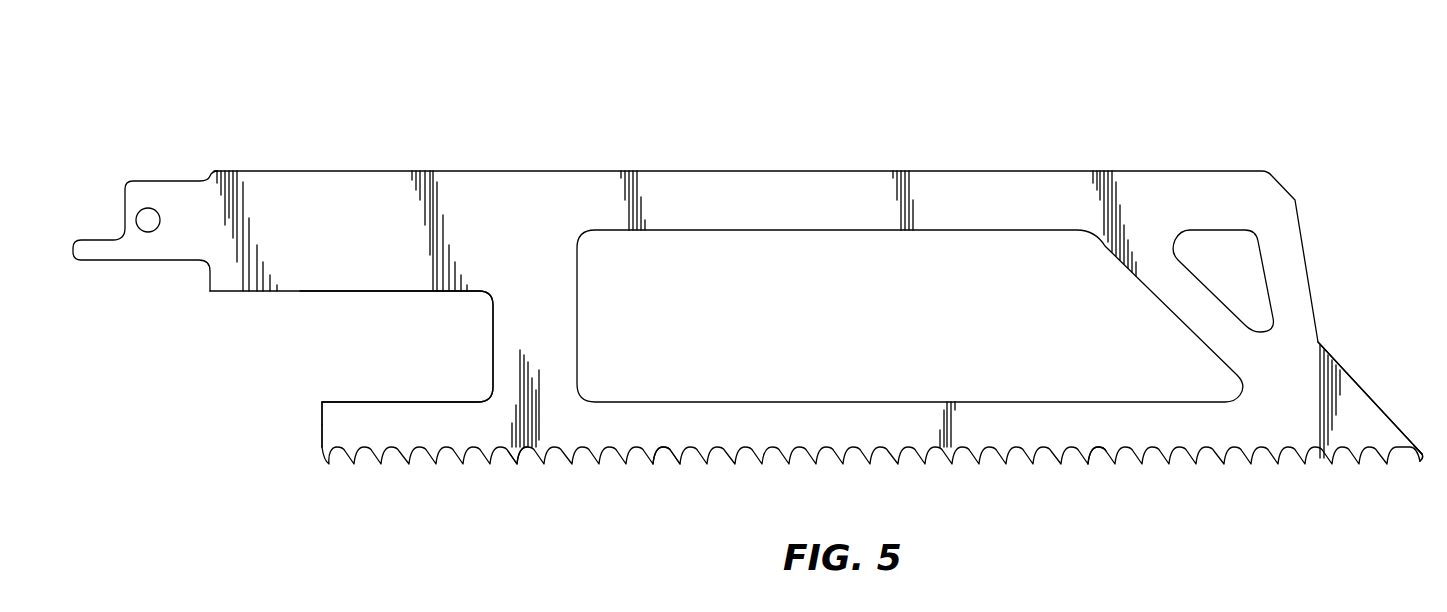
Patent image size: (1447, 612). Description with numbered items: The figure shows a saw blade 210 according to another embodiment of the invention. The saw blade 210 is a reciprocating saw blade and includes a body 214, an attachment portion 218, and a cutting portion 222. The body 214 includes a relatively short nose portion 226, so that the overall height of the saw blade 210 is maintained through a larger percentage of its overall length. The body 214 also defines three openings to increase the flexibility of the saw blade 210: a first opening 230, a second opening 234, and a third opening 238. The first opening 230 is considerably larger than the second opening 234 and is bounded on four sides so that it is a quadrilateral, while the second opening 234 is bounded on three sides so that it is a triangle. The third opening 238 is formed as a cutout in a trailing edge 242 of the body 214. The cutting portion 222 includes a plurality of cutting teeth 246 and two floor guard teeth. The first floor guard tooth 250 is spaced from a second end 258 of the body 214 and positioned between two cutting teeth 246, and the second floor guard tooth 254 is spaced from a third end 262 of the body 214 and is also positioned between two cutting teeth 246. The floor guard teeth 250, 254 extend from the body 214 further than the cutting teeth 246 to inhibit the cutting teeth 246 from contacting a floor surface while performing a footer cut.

The saw blade 210 is at (1075, 62).
The body 214 is at (557, 193).
The attachment portion 218 is at (162, 192).
The cutting portion 222 is at (340, 482).
The nose portion 226 is at (1357, 405).
The first opening 230 is at (742, 262).
The second opening 234 is at (1223, 252).
The third opening 238 is at (315, 329).
The trailing edge 242 is at (322, 417).
The cutting teeth 246 is at (658, 455).
The first floor guard tooth 250 is at (1085, 458).
The second floor guard tooth 254 is at (498, 460).
The second end 258 is at (1420, 453).
The third end 262 is at (322, 440).